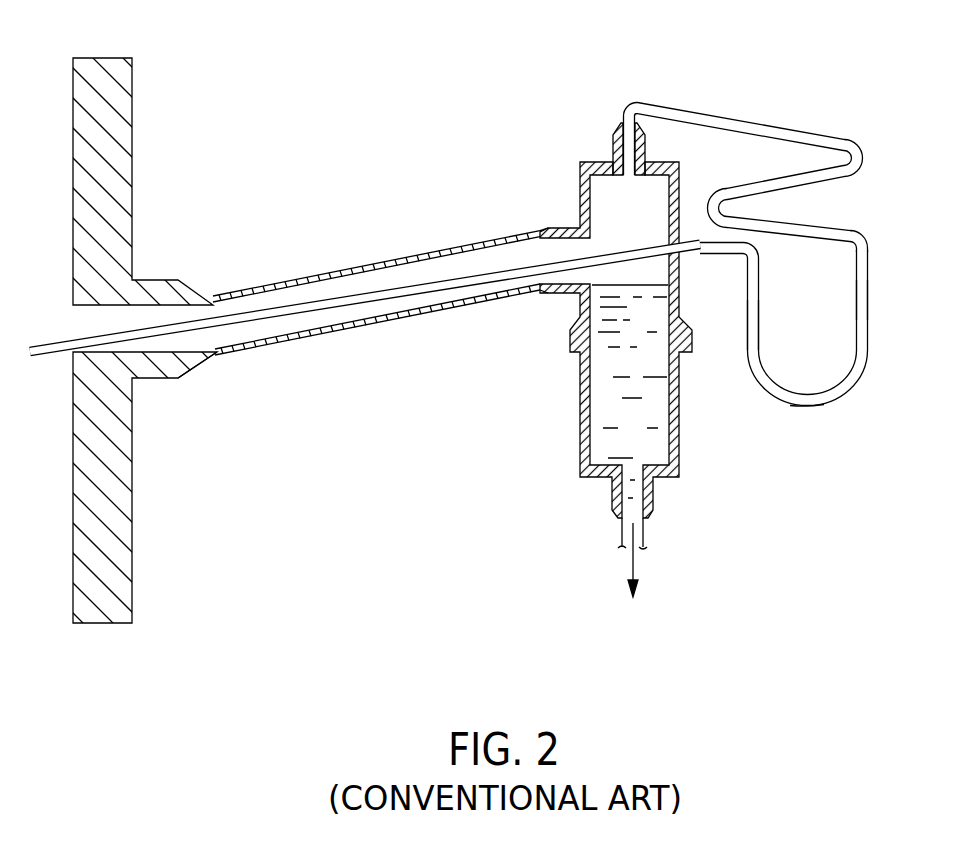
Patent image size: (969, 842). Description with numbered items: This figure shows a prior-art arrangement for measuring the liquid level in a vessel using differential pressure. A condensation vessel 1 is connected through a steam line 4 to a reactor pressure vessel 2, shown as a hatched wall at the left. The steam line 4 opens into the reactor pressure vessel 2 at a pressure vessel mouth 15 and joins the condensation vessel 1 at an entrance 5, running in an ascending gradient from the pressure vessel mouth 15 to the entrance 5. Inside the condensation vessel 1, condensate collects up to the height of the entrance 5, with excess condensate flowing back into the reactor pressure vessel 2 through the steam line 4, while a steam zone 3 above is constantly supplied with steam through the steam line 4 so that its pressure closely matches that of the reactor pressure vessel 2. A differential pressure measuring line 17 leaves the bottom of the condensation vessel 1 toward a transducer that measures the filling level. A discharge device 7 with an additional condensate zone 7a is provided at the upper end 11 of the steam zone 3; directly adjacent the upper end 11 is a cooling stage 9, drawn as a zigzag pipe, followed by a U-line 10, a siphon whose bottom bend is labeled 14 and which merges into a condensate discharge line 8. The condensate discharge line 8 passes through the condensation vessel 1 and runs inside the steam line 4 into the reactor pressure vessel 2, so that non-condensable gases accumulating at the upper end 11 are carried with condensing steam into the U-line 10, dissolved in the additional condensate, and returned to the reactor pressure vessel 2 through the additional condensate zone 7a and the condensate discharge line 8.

The condensation vessel 1 is at (580, 456).
The reactor pressure vessel 2 is at (107, 519).
The steam zone 3 is at (613, 220).
The steam line 4 is at (262, 328).
The entrance 5 is at (538, 252).
The discharge device 7 is at (858, 234).
The additional condensate zone 7a is at (866, 312).
The condensate discharge line 8 is at (350, 298).
The cooling stage 9 is at (775, 123).
The U-line 10 is at (760, 382).
The upper end 11 is at (628, 186).
The bottom bend of U-tube 14 is at (805, 407).
The pressure vessel mouth 15 is at (197, 343).
The differential pressure measuring line 17 is at (625, 530).